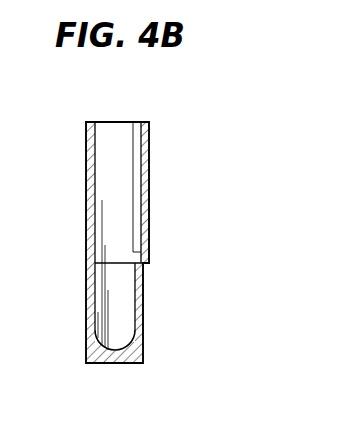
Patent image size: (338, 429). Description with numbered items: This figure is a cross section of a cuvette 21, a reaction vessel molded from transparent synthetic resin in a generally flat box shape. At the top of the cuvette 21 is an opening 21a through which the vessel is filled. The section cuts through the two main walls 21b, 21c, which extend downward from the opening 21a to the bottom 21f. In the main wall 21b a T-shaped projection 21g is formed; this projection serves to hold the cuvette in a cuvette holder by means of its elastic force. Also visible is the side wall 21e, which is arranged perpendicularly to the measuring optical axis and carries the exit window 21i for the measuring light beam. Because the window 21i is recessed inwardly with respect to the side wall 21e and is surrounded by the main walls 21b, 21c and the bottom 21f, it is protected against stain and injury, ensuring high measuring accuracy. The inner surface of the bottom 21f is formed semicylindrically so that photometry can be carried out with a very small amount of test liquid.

The cuvette 21 is at (205, 128).
The opening 21a is at (115, 122).
The main wall 21b is at (143, 302).
The main wall 21c is at (87, 180).
The side wall 21e is at (115, 220).
The bottom 21f is at (122, 363).
The T-shaped projection 21g is at (150, 178).
The exit window 21i is at (118, 330).